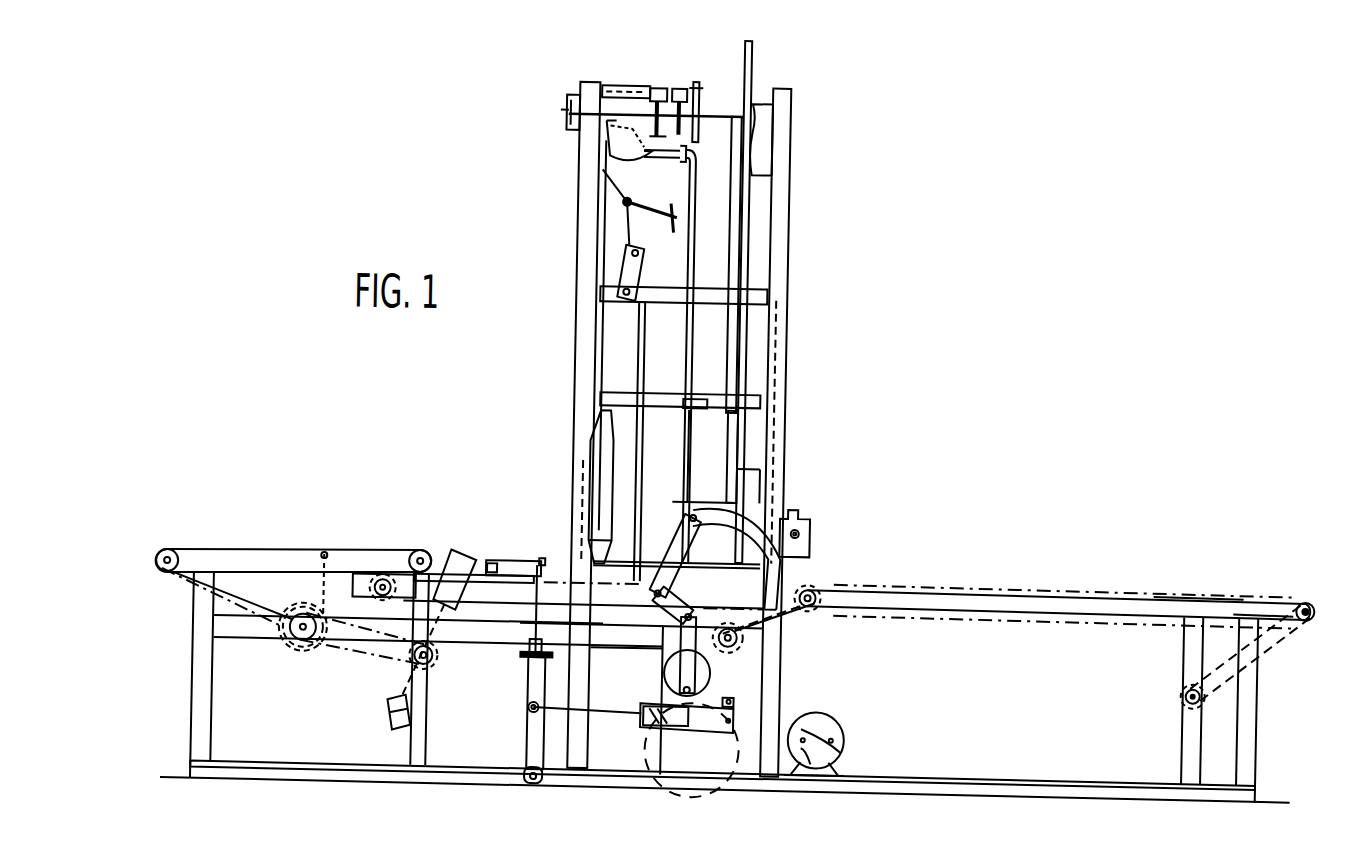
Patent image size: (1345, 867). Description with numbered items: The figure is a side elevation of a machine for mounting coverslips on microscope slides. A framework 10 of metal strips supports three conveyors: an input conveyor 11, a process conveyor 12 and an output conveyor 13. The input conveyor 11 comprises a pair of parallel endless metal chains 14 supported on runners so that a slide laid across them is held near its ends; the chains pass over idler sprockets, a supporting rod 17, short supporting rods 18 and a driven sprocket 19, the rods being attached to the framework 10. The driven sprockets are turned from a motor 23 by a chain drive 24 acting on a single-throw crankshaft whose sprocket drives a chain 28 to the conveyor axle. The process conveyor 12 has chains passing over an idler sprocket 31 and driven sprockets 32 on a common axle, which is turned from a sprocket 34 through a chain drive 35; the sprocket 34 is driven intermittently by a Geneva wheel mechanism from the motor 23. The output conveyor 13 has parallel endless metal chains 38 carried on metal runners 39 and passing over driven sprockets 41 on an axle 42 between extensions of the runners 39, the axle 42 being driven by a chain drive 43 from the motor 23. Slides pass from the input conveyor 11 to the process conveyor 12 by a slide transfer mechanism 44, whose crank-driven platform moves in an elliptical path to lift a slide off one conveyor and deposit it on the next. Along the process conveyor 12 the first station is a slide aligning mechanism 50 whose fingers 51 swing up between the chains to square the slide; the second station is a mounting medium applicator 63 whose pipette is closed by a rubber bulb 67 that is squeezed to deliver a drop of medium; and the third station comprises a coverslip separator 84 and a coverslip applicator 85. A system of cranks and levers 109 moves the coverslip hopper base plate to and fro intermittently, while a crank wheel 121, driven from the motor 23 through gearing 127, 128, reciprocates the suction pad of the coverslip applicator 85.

The framework 10 is at (190, 681).
The input conveyor 11 is at (293, 539).
The process conveyor 12 is at (469, 598).
The output conveyor 13 is at (1074, 662).
The endless metal chain 14 is at (180, 598).
The supporting rod 17 is at (326, 566).
The short supporting rod 18 is at (414, 553).
The driven sprocket 19 is at (292, 618).
The motor 23 is at (843, 732).
The chain drive 24 is at (724, 748).
The chain 28 is at (362, 660).
The idler sprocket 31 is at (377, 580).
The driven sprocket 32 is at (815, 588).
The sprocket 34 is at (732, 653).
The chain drive 35 is at (790, 616).
The endless metal chain 38 is at (1193, 588).
The metal runner 39 is at (1256, 592).
The driven sprocket 41 is at (1312, 597).
The axle 42 is at (1310, 606).
The chain drive 43 is at (1258, 650).
The slide transfer mechanism 44 is at (459, 549).
The slide aligning mechanism 50 is at (517, 560).
The finger 51 is at (542, 558).
The mounting medium applicator 63 is at (582, 463).
The rubber bulb 67 is at (594, 238).
The coverslip separator 84 is at (808, 536).
The coverslip applicator 85 is at (698, 450).
The cranks and levers 109 is at (768, 526).
The crank wheel 121 is at (742, 64).
The gearing 127 is at (552, 112).
The gearing 128 is at (590, 143).